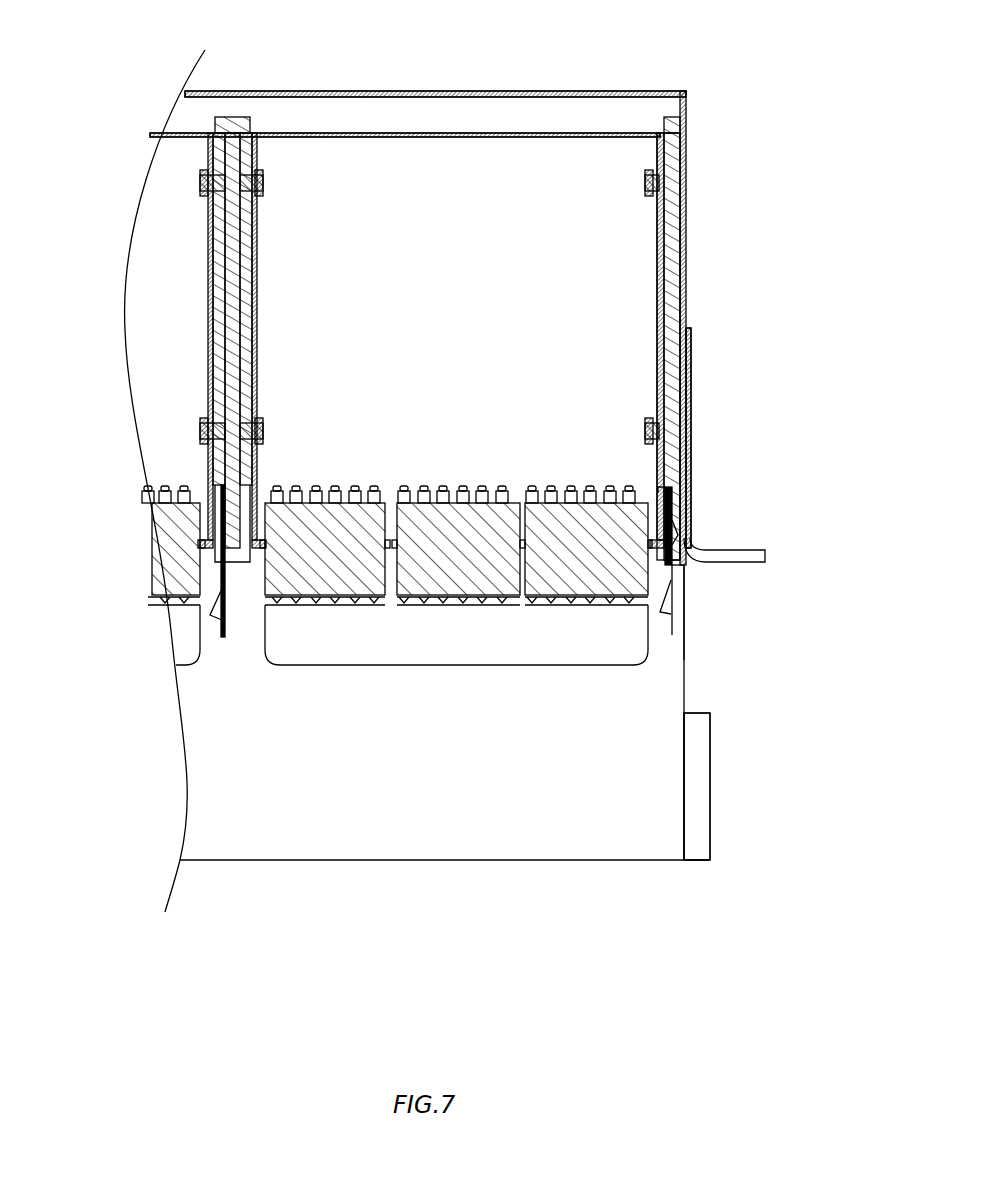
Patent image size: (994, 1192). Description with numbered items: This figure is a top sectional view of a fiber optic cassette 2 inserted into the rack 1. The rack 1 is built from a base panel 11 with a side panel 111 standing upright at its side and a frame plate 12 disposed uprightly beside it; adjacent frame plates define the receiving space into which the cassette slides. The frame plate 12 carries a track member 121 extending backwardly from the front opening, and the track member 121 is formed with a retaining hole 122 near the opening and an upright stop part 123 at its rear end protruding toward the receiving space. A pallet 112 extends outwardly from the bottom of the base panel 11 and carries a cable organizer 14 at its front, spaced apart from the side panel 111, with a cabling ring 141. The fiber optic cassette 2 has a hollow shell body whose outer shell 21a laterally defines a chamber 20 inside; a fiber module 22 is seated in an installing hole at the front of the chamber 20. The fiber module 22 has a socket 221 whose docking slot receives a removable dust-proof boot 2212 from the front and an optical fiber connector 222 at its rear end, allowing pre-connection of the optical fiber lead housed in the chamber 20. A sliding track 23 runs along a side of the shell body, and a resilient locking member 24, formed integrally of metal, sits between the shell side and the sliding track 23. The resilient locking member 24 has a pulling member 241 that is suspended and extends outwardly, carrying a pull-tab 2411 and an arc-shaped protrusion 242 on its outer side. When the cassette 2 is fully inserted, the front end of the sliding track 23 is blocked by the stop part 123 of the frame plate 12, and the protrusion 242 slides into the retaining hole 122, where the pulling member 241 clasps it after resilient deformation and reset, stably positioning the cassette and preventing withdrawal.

The rack 1 is at (677, 89).
The chamber 20 is at (472, 170).
The stop part 123 is at (672, 122).
The frame plate 12 is at (683, 470).
The sliding track 23 is at (670, 408).
The outer shell 21a is at (662, 320).
The fiber optic cassette 2 is at (770, 303).
The side panel 111 is at (688, 436).
The base panel 11 is at (770, 413).
The track member 121 is at (668, 495).
The retaining hole 122 is at (672, 530).
The protrusion 242 is at (688, 550).
The pull-tab 2411 is at (668, 612).
The pulling member 241 is at (676, 640).
The resilient locking member 24 is at (770, 648).
The pallet 112 is at (666, 698).
The cabling ring 141 is at (700, 847).
The cable organizer 14 is at (683, 935).
The fiber module 22 is at (130, 575).
The optical fiber connector 222 is at (150, 495).
The socket 221 is at (167, 565).
The dust-proof boot 2212 is at (175, 598).